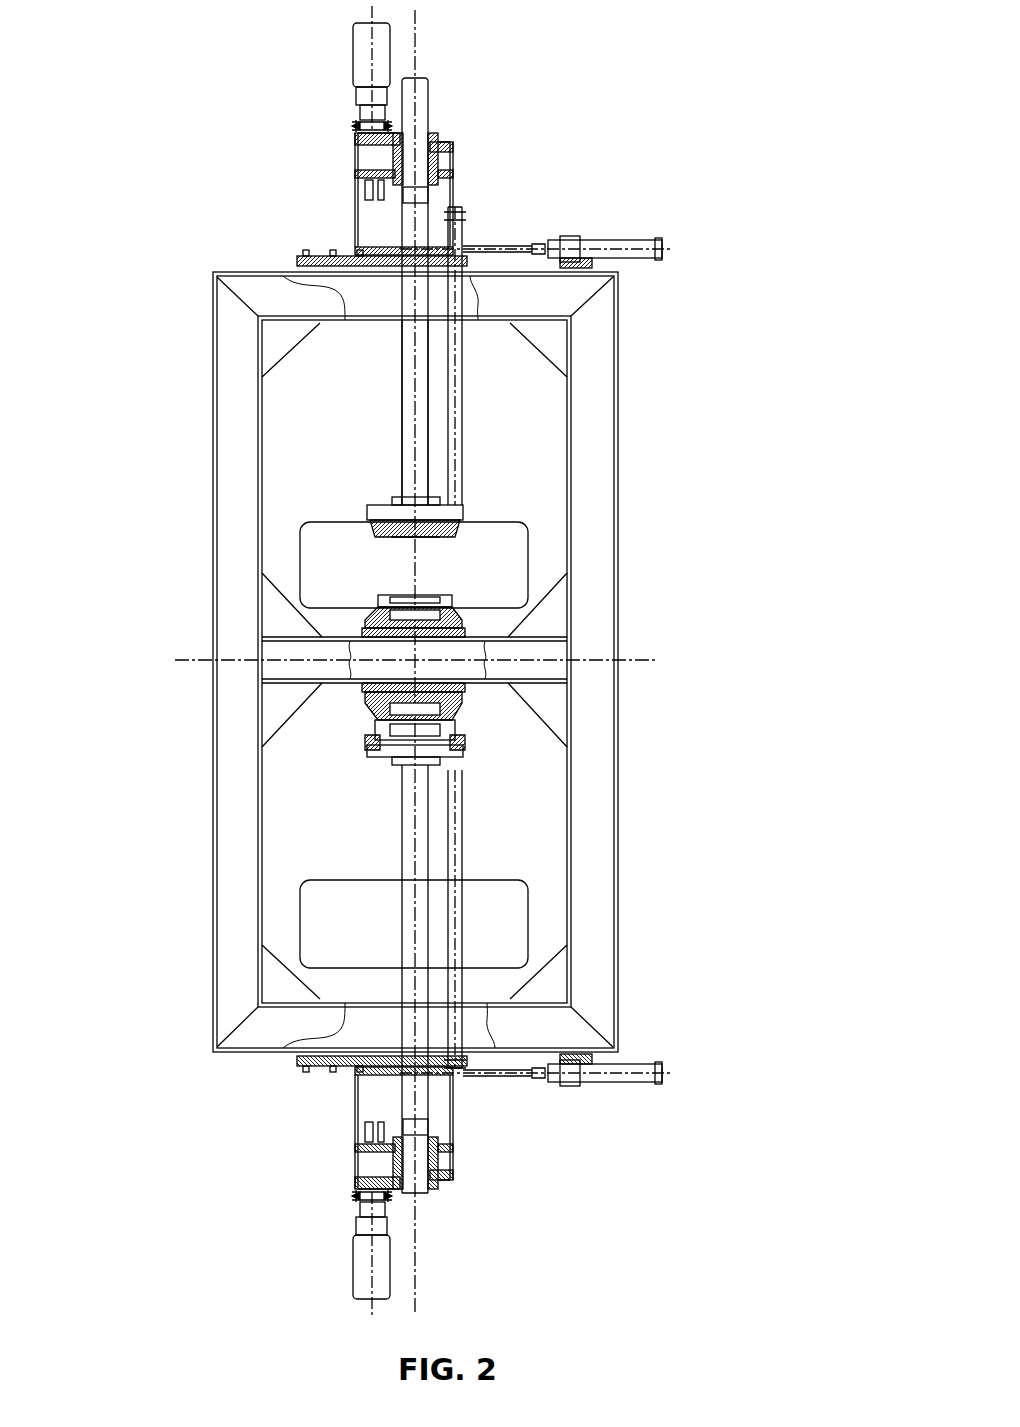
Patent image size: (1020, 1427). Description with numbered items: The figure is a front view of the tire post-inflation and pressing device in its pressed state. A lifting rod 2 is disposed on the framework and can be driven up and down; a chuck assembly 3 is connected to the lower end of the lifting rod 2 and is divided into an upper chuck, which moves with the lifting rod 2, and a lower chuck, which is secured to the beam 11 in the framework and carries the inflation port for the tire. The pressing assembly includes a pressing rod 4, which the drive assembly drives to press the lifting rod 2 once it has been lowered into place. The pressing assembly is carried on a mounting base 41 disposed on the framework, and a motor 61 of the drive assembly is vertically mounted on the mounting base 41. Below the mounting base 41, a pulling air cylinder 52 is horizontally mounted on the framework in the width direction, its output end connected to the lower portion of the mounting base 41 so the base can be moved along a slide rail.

The lifting rod 2 is at (420, 413).
The chuck assembly 3 is at (463, 712).
The pressing rod 4 is at (422, 114).
The beam 11 is at (490, 653).
The mounting base 41 is at (378, 210).
The pulling air cylinder 52 is at (617, 253).
The motor 61 is at (363, 50).